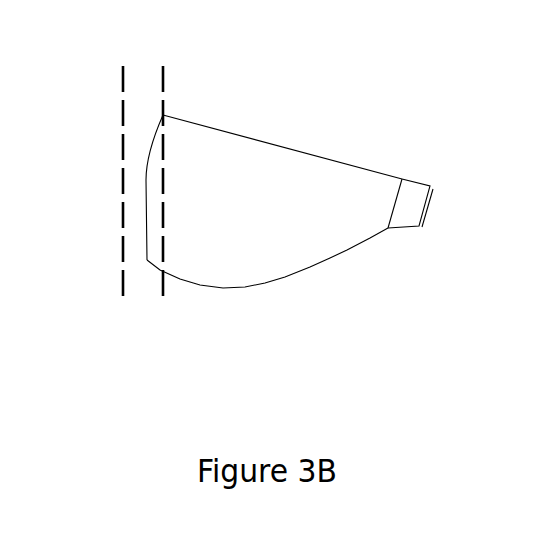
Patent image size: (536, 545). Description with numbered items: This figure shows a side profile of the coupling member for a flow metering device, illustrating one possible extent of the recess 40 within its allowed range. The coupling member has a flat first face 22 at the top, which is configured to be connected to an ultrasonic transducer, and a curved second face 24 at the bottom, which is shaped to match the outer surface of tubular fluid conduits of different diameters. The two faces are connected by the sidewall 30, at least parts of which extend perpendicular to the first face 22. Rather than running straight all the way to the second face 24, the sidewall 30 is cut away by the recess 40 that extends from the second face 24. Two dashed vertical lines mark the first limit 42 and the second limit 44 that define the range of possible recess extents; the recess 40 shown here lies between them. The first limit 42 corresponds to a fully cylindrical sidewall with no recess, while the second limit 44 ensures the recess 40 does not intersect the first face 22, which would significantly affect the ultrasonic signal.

The first face 22 is at (218, 130).
The second face 24 is at (246, 287).
The sidewall 30 is at (247, 225).
The recess 40 is at (145, 213).
The first limit 42 is at (121, 120).
The second limit 44 is at (163, 78).